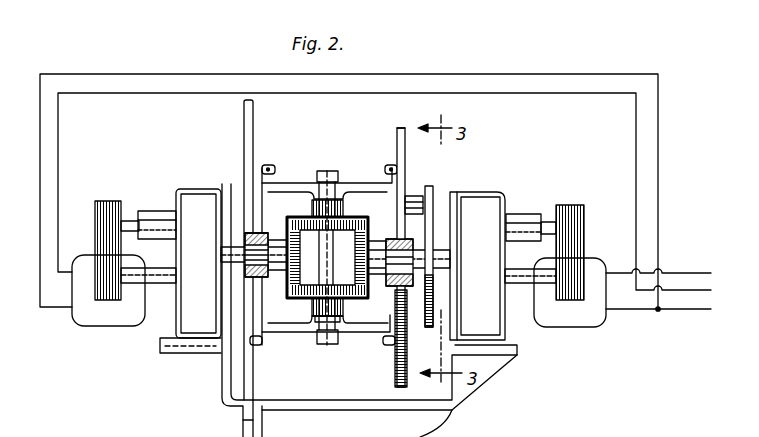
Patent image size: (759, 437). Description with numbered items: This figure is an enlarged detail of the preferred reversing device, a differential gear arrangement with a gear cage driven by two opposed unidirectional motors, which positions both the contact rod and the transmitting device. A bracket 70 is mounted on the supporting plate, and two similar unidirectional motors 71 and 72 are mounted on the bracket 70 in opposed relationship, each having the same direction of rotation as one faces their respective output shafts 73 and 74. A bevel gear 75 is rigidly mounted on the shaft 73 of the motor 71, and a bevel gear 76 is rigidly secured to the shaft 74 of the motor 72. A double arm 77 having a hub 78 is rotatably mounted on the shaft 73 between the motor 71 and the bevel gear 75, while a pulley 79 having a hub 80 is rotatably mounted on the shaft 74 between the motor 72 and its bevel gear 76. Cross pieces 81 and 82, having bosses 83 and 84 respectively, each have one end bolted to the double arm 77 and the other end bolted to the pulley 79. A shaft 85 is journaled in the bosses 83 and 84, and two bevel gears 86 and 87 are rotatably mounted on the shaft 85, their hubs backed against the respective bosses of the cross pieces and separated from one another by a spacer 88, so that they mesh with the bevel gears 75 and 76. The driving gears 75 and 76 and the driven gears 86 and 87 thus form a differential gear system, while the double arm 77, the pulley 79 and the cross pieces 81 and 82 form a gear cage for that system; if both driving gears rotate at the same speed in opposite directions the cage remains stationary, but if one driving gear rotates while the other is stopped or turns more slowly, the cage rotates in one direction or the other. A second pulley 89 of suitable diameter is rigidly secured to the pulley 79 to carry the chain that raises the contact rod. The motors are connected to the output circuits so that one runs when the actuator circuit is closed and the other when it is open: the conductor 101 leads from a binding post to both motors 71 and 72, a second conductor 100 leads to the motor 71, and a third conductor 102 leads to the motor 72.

The bracket 70 is at (222, 382).
The unidirectional motor 71 is at (183, 192).
The unidirectional motor 72 is at (501, 196).
The output shaft 73 is at (247, 250).
The output shaft 74 is at (406, 198).
The bevel gear 75 is at (240, 280).
The bevel gear 76 is at (378, 282).
The double arm 77 is at (253, 304).
The hub 78 is at (250, 236).
The pulley 79 is at (399, 130).
The hub 80 is at (397, 241).
The cross piece 81 is at (363, 183).
The cross piece 82 is at (264, 338).
The boss 83 is at (283, 182).
The boss 84 is at (307, 319).
The shaft 85 is at (323, 170).
The bevel gear 86 is at (343, 196).
The bevel gear 87 is at (335, 336).
The spacer 88 is at (300, 236).
The second pulley 89 is at (428, 205).
The second conductor 100 is at (646, 290).
The conductor 101 is at (684, 311).
The third conductor 102 is at (680, 271).